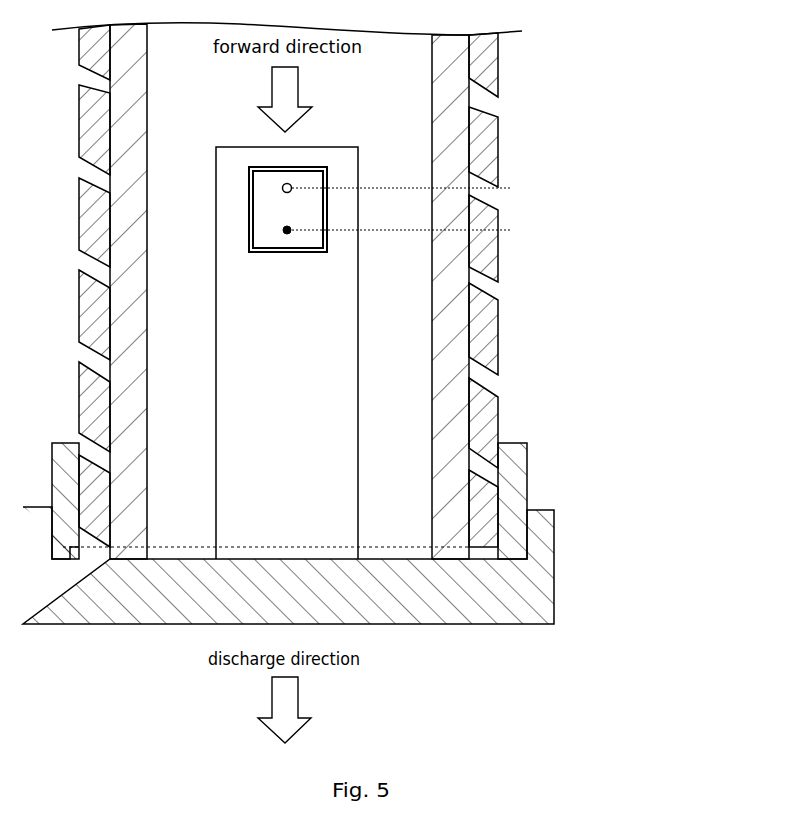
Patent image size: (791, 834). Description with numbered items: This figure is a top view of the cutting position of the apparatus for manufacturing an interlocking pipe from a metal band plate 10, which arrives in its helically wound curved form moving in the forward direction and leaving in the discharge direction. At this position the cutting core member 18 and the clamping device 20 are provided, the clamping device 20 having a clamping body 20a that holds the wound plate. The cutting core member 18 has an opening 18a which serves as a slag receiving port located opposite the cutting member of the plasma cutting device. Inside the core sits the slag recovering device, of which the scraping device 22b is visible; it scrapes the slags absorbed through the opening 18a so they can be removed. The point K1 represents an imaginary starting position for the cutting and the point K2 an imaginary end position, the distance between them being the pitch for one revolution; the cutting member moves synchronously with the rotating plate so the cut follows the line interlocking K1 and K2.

The metal band plate for interlocking pipe 10 is at (502, 332).
The cutting core member 18 is at (448, 422).
The opening of core member 18a is at (313, 167).
The scraping device 22b is at (312, 238).
The clamping device 20 is at (515, 595).
The clamping body 20a is at (517, 488).
The imaginary point of starting position for cutting K1 is at (517, 188).
The imaginary point of end position for cutting K2 is at (502, 230).